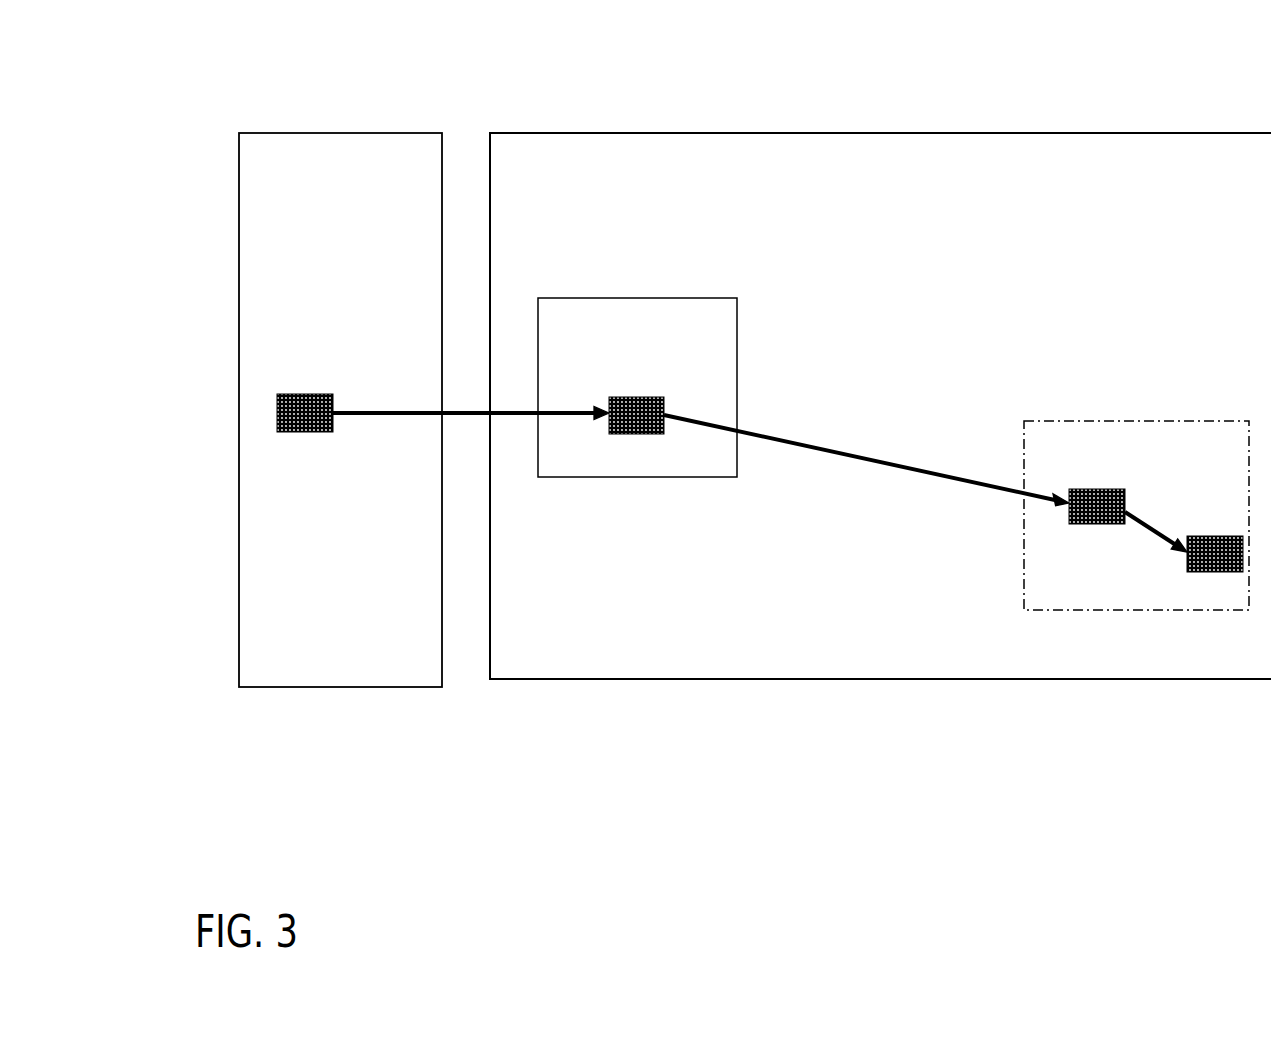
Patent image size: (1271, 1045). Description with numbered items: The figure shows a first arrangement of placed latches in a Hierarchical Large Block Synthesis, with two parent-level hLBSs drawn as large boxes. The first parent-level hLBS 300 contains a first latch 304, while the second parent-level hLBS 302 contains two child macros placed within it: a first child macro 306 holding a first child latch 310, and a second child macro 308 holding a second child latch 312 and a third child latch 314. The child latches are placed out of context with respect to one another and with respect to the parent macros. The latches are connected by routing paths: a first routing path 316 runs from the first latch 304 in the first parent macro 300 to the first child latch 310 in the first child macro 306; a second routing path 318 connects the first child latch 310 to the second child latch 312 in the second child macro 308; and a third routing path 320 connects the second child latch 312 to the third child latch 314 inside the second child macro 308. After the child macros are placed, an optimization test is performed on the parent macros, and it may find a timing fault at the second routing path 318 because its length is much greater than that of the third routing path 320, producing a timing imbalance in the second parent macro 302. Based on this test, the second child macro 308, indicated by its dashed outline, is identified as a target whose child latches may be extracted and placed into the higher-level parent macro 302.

The first parent-level hLBS 300 is at (296, 131).
The second parent-level hLBS 302 is at (882, 132).
The first latch 304 is at (305, 393).
The first child macro 306 is at (629, 296).
The second child macro 308 is at (1131, 420).
The first child latch 310 is at (638, 396).
The second child latch 312 is at (1090, 488).
The third child latch 314 is at (1211, 535).
The first routing path 316 is at (471, 412).
The second routing path 318 is at (862, 455).
The third routing path 320 is at (1155, 525).